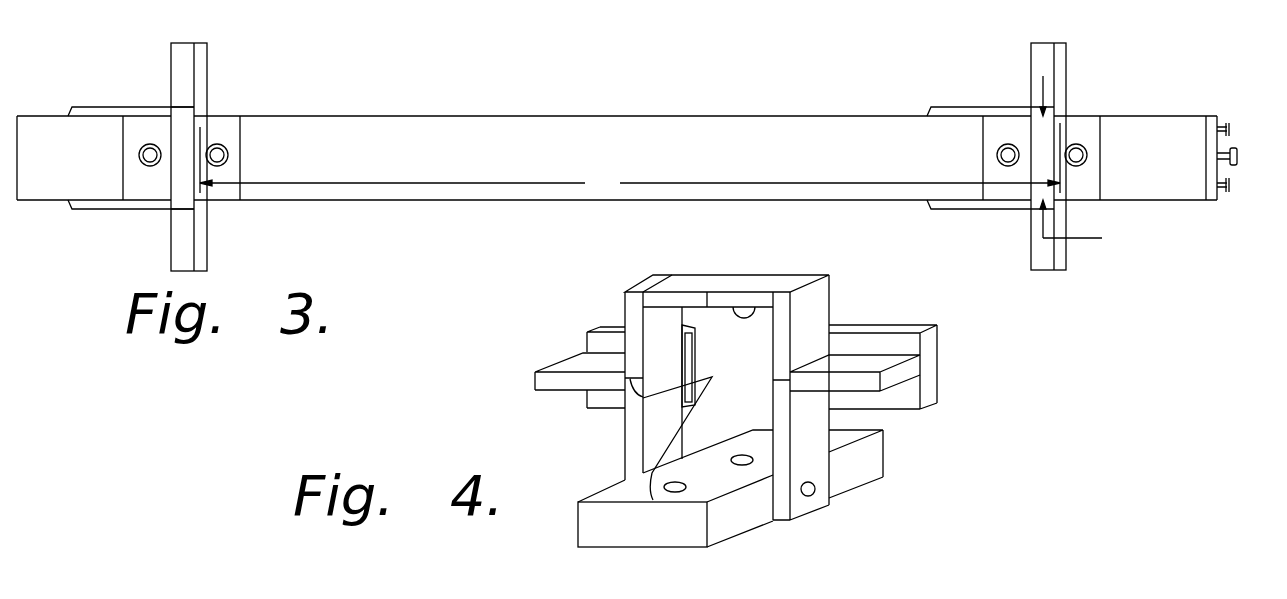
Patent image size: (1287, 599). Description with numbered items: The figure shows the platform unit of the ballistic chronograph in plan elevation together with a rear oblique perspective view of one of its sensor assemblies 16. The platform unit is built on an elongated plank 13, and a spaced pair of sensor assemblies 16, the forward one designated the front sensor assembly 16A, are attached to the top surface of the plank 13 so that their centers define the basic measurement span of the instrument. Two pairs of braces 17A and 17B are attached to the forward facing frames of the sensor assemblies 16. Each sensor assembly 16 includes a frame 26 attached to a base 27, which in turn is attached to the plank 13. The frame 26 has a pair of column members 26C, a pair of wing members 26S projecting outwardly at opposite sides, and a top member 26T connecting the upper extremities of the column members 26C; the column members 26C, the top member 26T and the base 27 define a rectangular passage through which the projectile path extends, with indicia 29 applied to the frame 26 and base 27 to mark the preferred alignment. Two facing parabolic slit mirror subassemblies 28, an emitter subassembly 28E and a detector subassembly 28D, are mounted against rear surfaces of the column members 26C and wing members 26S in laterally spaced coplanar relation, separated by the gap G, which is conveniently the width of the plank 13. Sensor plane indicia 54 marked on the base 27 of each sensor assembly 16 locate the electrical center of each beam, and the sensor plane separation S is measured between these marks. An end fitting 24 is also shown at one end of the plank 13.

In FIG. 3, the plank 13 is at (546, 140).
In FIG. 4, the sensor assembly 16 is at (510, 415).
In FIG. 3, the front sensor assembly 16A is at (207, 53).
In FIG. 3, the brace 17A is at (147, 107).
In FIG. 3, the brace 17B is at (1008, 105).
In FIG. 3, the end fitting with pins 24 is at (1228, 124).
In FIG. 4, the frame 26 is at (535, 378).
In FIG. 4, the column member 26C is at (667, 275).
In FIG. 3, the wing member 26S is at (168, 68).
In FIG. 4, the wing member 26S is at (570, 392).
In FIG. 4, the top member 26T is at (735, 307).
In FIG. 3, the base 27 is at (242, 157).
In FIG. 4, the base 27 is at (577, 528).
In FIG. 4, the parabolic slit mirror subassembly 28 is at (610, 327).
In FIG. 3, the detector subassembly 28D is at (207, 250).
In FIG. 3, the emitter subassembly 28E is at (207, 88).
In FIG. 4, the indicia 29 is at (784, 380).
In FIG. 3, the sensor plane indicia 54 is at (200, 147).
In FIG. 4, the sensor plane indicia 54 is at (752, 450).
In FIG. 3, the gap G is at (1083, 165).
In FIG. 3, the sensor plane separation S is at (630, 160).